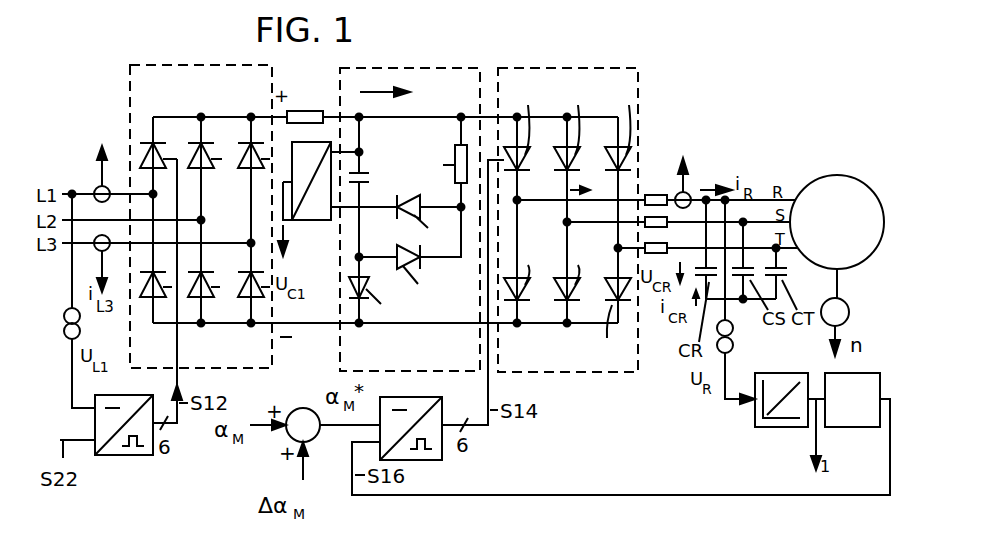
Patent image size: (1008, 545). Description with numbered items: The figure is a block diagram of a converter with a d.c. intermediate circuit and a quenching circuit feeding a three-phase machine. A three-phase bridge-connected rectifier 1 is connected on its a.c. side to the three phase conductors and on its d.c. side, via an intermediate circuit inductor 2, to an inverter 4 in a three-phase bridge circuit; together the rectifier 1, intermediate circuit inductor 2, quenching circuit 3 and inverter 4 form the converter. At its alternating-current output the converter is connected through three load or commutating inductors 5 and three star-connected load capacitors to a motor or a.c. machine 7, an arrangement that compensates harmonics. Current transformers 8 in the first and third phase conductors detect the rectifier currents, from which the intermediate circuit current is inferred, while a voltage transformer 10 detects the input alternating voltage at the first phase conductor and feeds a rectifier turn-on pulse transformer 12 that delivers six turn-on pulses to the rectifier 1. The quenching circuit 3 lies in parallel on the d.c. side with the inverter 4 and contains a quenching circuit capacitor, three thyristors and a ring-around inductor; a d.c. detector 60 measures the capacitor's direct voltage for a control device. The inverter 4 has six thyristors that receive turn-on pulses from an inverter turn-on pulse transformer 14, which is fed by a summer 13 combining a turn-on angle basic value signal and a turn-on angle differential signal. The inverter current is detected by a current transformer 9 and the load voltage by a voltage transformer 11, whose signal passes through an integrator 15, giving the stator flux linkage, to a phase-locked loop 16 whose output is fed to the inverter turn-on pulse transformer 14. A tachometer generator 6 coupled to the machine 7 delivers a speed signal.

The 3-phase bridge-connected rectifier 1 is at (185, 65).
The intermediate circuit inductor 2 is at (305, 111).
The quenching circuit 3 is at (390, 68).
The inverter 4 is at (545, 68).
The load or commutating inductors 5 is at (652, 248).
The tachometer generator 6 is at (850, 315).
The a.c. machine 7 is at (835, 175).
The current transformers 8 is at (95, 190).
The current transformer 9 is at (690, 194).
The voltage transformer 10 is at (64, 322).
The voltage transformer 11 is at (733, 335).
The rectifier turn-on pulse transformer 12 is at (125, 455).
The summer 13 is at (303, 408).
The inverter turn-on pulse transformer 14 is at (442, 402).
The integrator 15 is at (780, 427).
The phase-locked loop 16 is at (852, 427).
The d.c. detector 60 is at (337, 202).